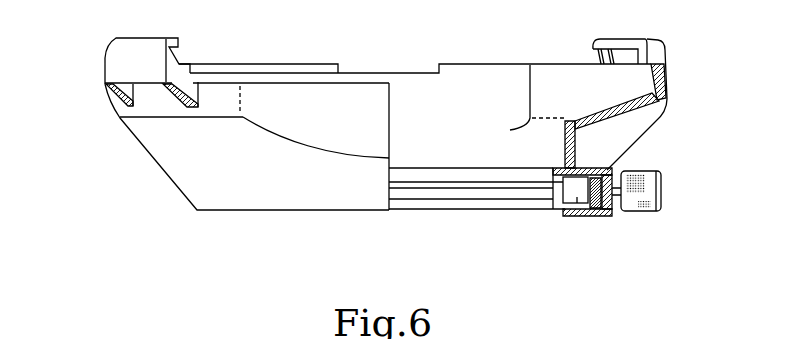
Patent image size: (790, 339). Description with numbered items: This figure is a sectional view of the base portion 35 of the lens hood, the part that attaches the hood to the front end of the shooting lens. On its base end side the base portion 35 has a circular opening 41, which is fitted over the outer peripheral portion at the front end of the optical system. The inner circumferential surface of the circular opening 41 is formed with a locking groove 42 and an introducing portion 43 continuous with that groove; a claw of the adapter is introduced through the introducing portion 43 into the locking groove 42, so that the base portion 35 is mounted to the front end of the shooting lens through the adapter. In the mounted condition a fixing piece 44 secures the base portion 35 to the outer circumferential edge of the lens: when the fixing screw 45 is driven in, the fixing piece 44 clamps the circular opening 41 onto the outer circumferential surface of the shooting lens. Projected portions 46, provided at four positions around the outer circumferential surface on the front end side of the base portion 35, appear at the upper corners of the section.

The base portion 35 is at (187, 153).
The circular opening 41 is at (425, 205).
The locking groove 42 is at (493, 196).
The introducing portion 43 is at (557, 206).
The fixing piece 44 is at (580, 214).
The fixing screw 45 is at (663, 183).
The projected portions 46 is at (123, 60).